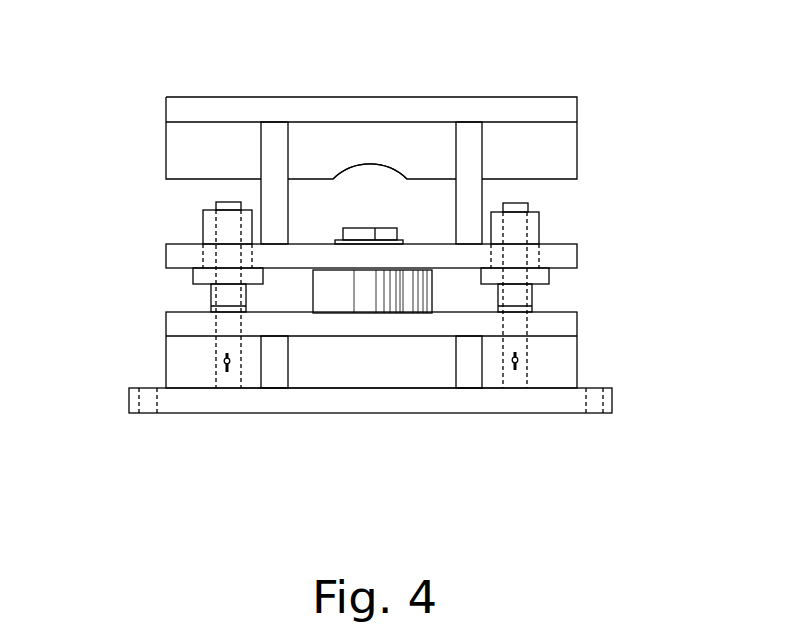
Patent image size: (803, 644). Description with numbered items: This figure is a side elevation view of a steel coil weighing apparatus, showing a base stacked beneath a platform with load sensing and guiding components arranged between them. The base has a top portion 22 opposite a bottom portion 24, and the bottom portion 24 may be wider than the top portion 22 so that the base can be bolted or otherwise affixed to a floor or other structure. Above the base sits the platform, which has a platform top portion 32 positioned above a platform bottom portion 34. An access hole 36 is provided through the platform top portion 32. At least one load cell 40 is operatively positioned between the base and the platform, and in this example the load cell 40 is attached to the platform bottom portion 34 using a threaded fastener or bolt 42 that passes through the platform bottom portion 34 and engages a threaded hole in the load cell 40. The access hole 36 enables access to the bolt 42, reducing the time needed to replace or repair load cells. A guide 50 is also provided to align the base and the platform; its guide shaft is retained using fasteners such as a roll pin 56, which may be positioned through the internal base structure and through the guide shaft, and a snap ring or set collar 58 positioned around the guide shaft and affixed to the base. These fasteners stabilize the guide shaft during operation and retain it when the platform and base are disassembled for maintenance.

The top portion 22 is at (577, 327).
The bottom portion 24 is at (130, 412).
The platform top portion 32 is at (562, 103).
The platform bottom portion 34 is at (578, 255).
The access hole 36 is at (383, 167).
The load cell 40 is at (348, 300).
The bolt 42 is at (357, 228).
The guide 50 is at (540, 224).
The roll pin 56 is at (225, 364).
The set collar 58 is at (210, 310).